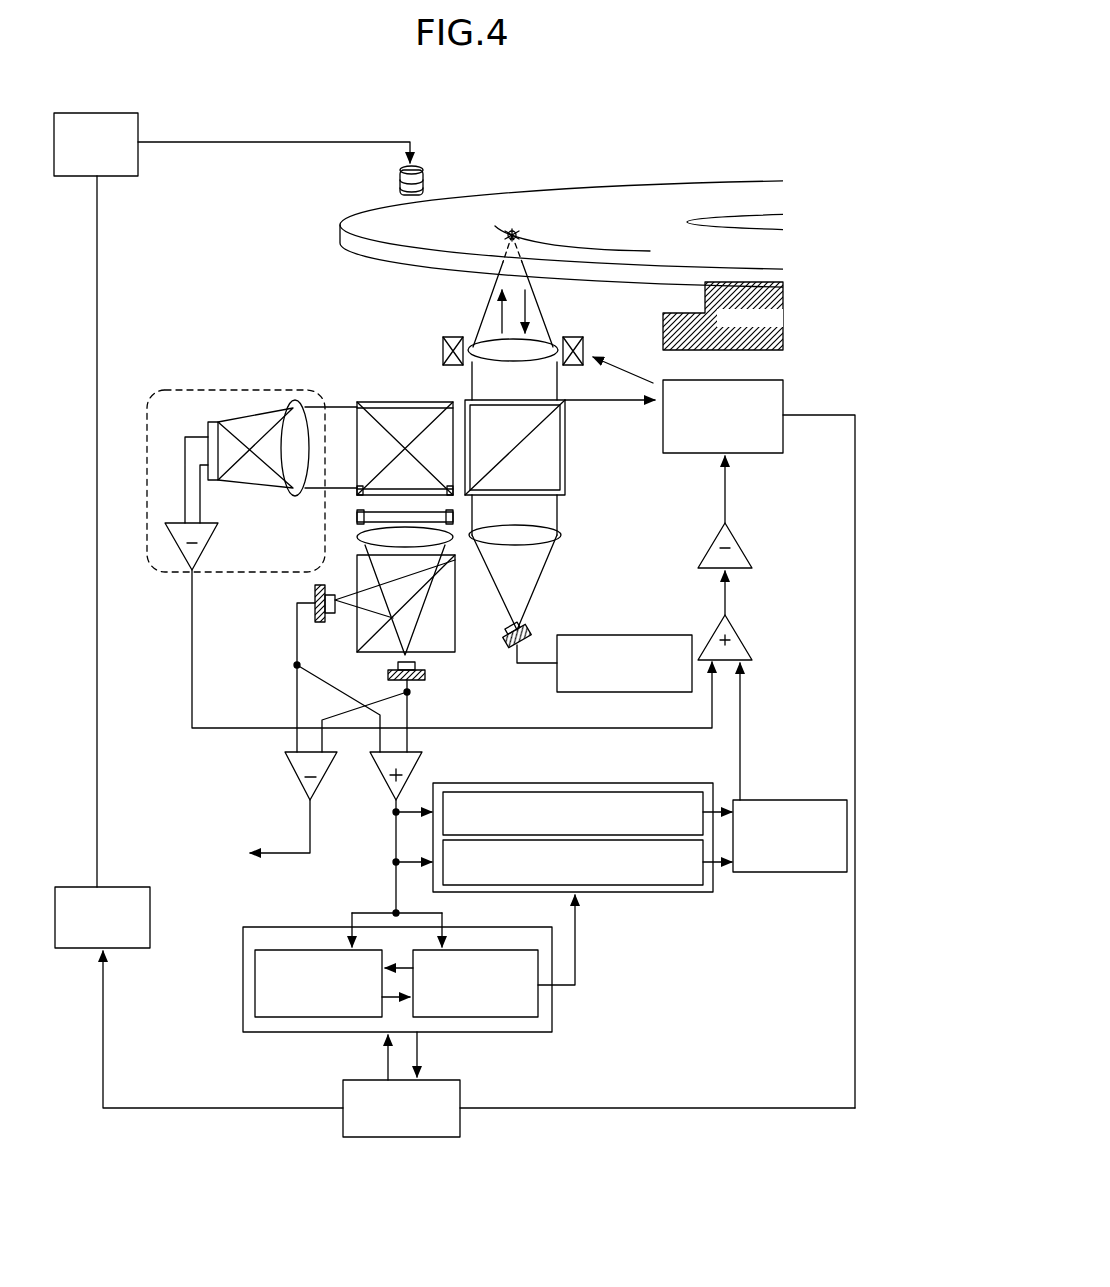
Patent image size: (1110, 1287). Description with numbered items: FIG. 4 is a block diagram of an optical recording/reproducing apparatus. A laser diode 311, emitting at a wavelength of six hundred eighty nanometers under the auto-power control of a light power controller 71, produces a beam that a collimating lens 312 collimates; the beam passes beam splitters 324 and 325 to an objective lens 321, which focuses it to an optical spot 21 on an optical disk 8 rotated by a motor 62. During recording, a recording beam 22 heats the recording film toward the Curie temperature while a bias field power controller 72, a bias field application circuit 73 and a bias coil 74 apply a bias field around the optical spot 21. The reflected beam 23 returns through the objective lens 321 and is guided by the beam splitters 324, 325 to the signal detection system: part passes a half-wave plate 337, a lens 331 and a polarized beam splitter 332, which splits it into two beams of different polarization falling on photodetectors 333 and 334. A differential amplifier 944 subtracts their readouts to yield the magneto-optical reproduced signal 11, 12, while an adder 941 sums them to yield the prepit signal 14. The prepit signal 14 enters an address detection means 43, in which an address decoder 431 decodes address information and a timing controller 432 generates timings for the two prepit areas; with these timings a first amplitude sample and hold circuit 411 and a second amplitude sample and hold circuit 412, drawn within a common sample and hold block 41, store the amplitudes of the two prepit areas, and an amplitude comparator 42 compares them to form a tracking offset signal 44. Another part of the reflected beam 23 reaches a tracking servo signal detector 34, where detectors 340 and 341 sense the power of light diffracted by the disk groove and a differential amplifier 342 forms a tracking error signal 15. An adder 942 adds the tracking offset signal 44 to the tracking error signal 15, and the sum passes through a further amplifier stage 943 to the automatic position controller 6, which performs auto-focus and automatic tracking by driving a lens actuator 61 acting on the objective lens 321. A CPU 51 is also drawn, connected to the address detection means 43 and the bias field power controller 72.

The optical disk 8 is at (625, 195).
The optical spot 21 is at (514, 231).
The recording beam 22 is at (497, 318).
The reflected beam 23 is at (530, 318).
The objective lens 321 is at (487, 357).
The lens actuator 61 is at (585, 345).
The bias coil 74 is at (422, 165).
The motor 62 is at (785, 300).
The bias field application circuit 73 is at (138, 160).
The beam splitter 325 is at (372, 400).
The beam splitter 324 is at (570, 480).
The tracking servo signal detector 34 is at (170, 390).
The photodetector 340 is at (220, 418).
The photodetector 341 is at (233, 485).
The differential amplifier 342 is at (215, 552).
The tracking error signal 15 is at (640, 730).
The lens 331 is at (360, 517).
The half-wave plate 337 is at (447, 545).
The polarized beam splitter 332 is at (455, 642).
The photodetector 333 is at (300, 608).
The photodetector 334 is at (425, 680).
The collimating lens 312 is at (568, 535).
The laser diode 311 is at (535, 628).
The light power controller 71 is at (630, 635).
The automatic position controller 6 is at (688, 455).
The subtractor 943 is at (742, 545).
The adder 942 is at (745, 625).
The tracking offset signal 44 is at (742, 738).
The differential amplifier 944 is at (287, 765).
The adder 941 is at (425, 760).
The magneto-optical signal 11 is at (234, 838).
The magneto-electrical reproduced signal 12 is at (308, 810).
The prepit signal 14 is at (393, 812).
The amplitude sample and hold unit 41 is at (582, 845).
The first amplitude sample and hold circuit 411 is at (578, 792).
The second amplitude sample and hold circuit 412 is at (692, 888).
The amplitude comparator 42 is at (790, 873).
The bias field power controller 72 is at (150, 912).
The address detection means 43 is at (399, 963).
The address decoder 431 is at (255, 975).
The timing controller 432 is at (540, 1000).
The CPU 51 is at (460, 1095).